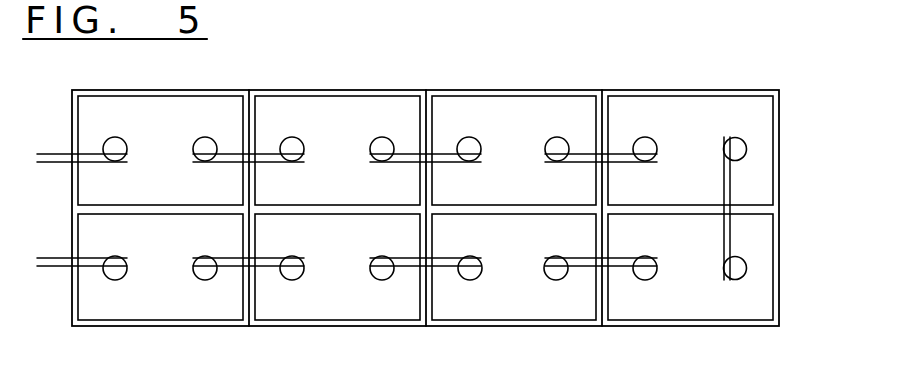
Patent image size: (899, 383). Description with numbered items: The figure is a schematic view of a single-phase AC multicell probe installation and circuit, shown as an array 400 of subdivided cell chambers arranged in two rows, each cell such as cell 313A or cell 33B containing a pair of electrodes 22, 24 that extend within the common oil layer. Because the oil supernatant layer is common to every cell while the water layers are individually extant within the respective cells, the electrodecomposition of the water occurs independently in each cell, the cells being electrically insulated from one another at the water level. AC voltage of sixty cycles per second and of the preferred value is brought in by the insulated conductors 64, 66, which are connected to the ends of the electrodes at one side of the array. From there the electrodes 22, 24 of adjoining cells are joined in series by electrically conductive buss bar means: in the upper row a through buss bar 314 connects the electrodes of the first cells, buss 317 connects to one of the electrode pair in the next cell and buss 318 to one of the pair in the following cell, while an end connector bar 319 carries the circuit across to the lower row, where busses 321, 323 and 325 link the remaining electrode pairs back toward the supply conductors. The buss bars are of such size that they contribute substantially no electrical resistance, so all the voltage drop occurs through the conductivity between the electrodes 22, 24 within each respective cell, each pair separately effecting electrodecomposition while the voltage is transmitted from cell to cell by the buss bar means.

The electrode 22 is at (115, 137).
The electrode 24 is at (205, 137).
The insulated conductor 64 is at (58, 158).
The insulated conductor 66 is at (55, 263).
The through buss bar 314 is at (236, 158).
The buss 317 is at (410, 158).
The buss 318 is at (617, 158).
The end connector bar 319 is at (725, 172).
The connecting bus bar 321 is at (622, 262).
The connecting bus bar 323 is at (450, 262).
The connecting bus bar 325 is at (265, 262).
The cell assembly 400 is at (425, 236).
The cell 313A is at (277, 378).
The cell 33B is at (342, 378).